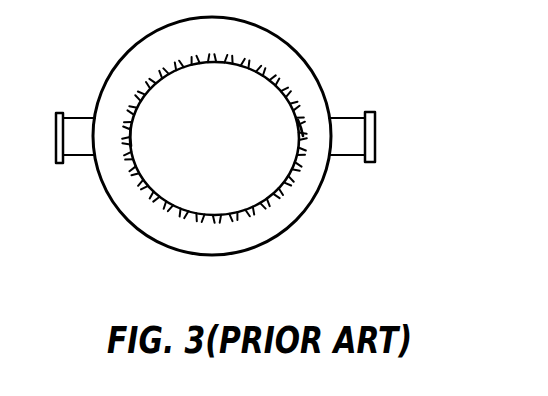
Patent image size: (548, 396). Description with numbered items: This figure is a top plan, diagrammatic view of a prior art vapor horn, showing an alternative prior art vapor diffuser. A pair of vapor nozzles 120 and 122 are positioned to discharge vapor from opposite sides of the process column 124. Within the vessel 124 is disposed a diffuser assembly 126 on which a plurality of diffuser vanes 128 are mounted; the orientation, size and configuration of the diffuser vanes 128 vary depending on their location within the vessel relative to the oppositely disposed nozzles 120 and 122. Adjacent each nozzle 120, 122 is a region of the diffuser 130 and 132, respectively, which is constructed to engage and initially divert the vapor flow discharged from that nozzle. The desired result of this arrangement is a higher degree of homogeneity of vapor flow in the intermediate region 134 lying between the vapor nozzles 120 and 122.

The vapor nozzle 120 is at (80, 157).
The vapor nozzle 122 is at (348, 156).
The process column 124 is at (160, 246).
The diffuser assembly 126 is at (253, 213).
The diffuser vanes 128 is at (287, 186).
The diffuser region 130 is at (131, 146).
The diffuser region 132 is at (303, 136).
The intermediate region 134 is at (217, 122).